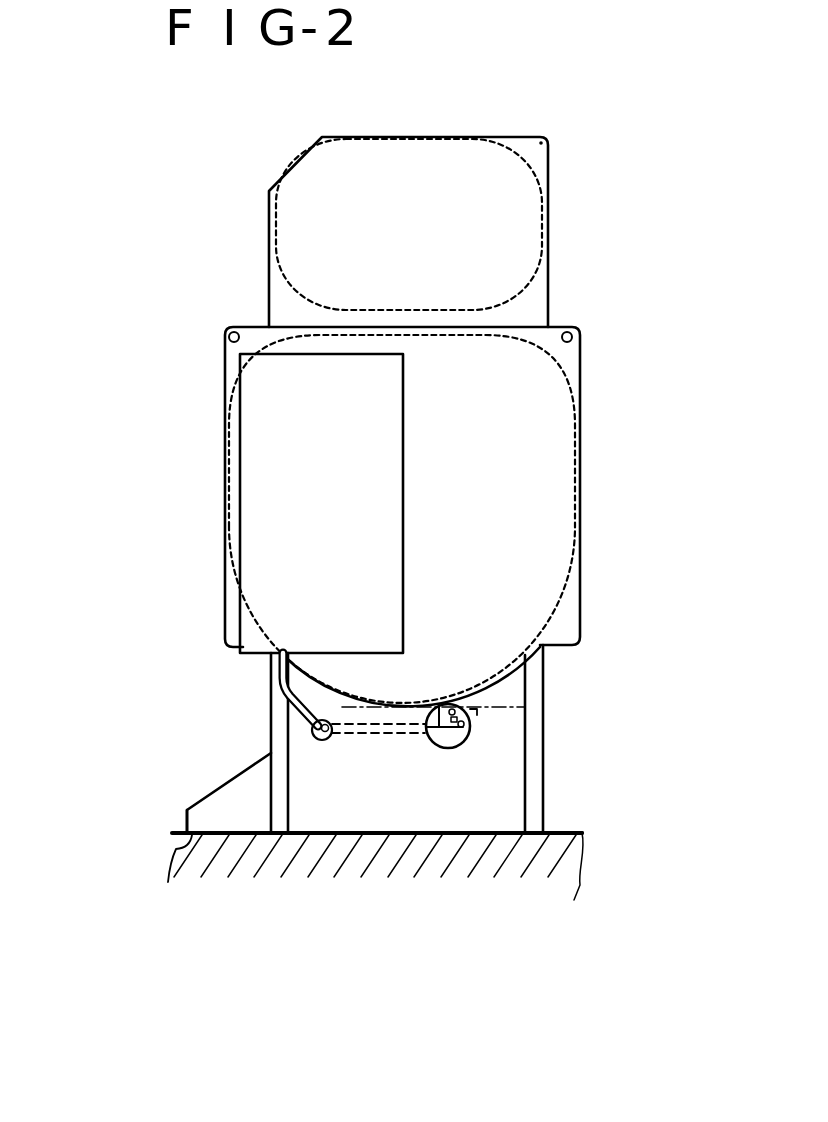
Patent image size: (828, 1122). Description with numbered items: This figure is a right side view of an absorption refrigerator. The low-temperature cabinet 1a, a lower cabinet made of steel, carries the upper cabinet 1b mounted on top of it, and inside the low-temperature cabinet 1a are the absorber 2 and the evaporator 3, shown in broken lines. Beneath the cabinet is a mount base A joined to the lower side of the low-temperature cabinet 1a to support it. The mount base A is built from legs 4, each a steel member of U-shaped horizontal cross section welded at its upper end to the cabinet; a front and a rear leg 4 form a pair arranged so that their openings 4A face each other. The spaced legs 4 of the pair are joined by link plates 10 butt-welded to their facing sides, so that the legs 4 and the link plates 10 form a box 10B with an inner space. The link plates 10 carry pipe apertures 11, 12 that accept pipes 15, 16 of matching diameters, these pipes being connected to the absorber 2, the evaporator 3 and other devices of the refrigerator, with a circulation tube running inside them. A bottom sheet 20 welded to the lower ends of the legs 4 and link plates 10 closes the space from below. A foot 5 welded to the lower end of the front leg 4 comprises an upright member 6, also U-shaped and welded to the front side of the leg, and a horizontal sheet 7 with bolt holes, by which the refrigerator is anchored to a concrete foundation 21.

The low-temperature cabinet 1a is at (570, 373).
The upper cabinet 1b is at (534, 171).
The absorber 2 is at (558, 518).
The evaporator 3 is at (267, 482).
The leg 4 is at (270, 712).
The opening 4A is at (562, 760).
The foot 5 is at (183, 801).
The upright member 6 is at (232, 787).
The horizontal sheet 7 is at (177, 852).
The link plate 10 is at (368, 808).
The box 10B is at (550, 807).
The pipe aperture 11 is at (455, 745).
The pipe aperture 12 is at (322, 742).
The pipe 15 is at (443, 749).
The pipe 16 is at (328, 738).
The bottom sheet 20 is at (437, 833).
The foundation 21 is at (530, 853).
The mount base A is at (550, 710).